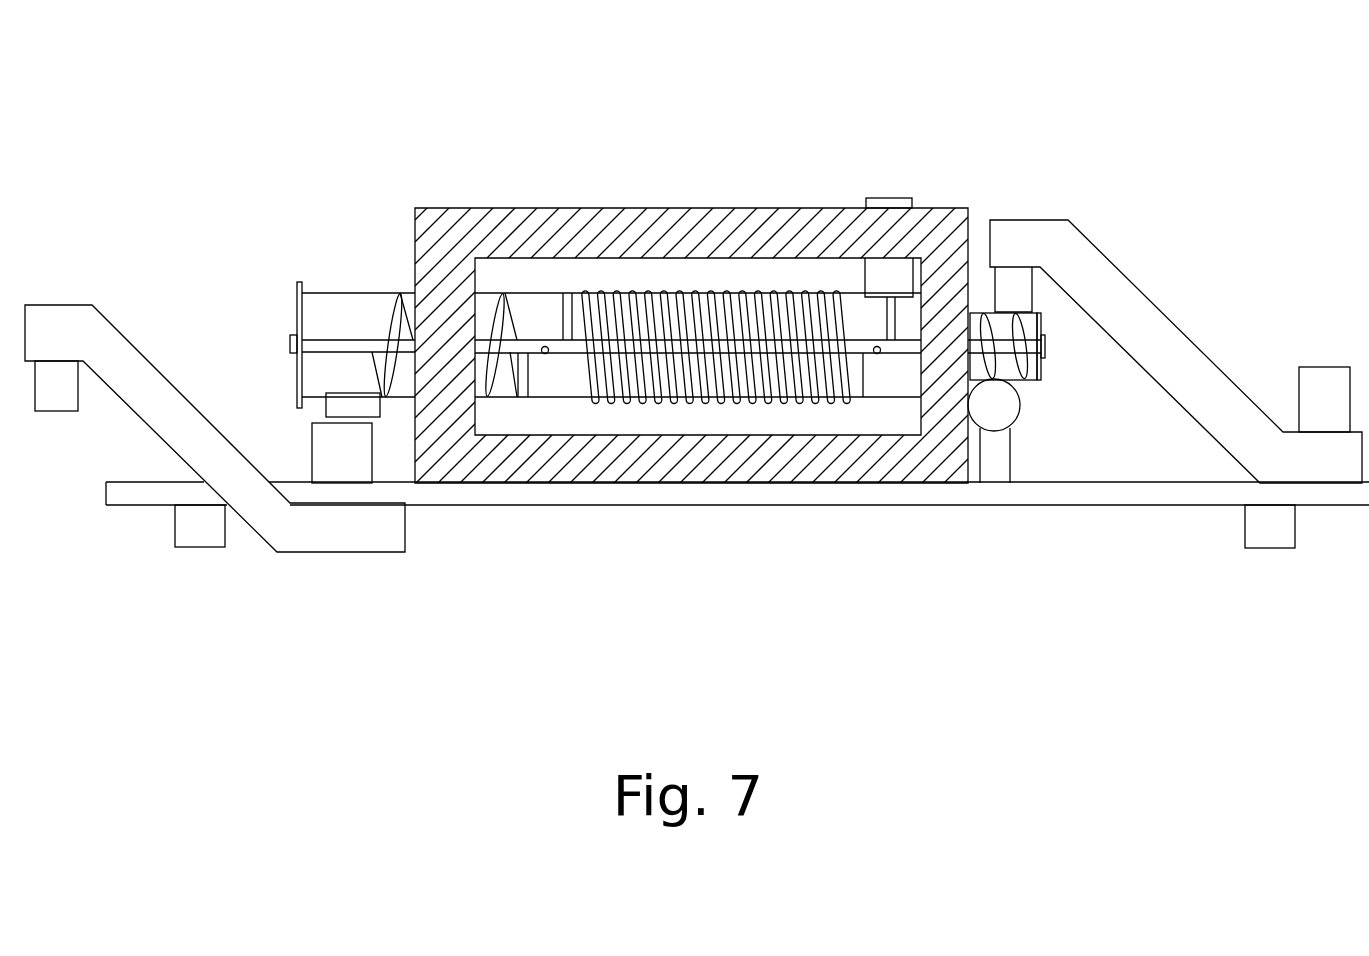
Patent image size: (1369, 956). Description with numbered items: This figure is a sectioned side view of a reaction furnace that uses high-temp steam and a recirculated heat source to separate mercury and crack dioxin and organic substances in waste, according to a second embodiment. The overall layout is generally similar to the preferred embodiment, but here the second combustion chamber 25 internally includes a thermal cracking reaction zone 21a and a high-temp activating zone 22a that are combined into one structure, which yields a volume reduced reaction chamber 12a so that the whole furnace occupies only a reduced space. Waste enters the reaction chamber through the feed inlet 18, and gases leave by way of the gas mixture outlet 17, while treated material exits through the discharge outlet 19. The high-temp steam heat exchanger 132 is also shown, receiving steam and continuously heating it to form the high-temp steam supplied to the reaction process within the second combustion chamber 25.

The volume reduced reaction chamber 12a is at (552, 108).
The high-temp activating zone 22a is at (485, 310).
The thermal cracking reaction zone 21a is at (860, 318).
The gas mixture outlet 17 is at (893, 198).
The feed inlet 18 is at (1007, 300).
The discharge outlet 19 is at (355, 407).
The second combustion chamber 25 is at (697, 435).
The high-temp steam heat exchanger 132 is at (832, 403).